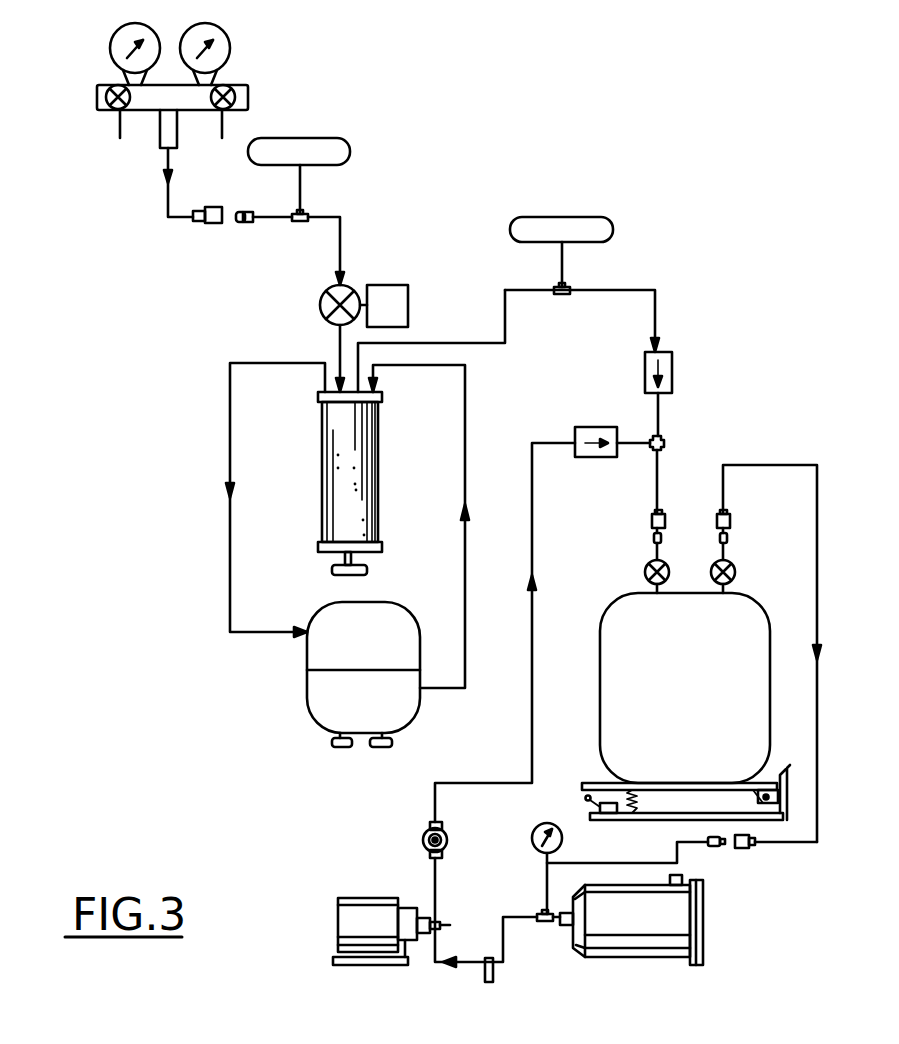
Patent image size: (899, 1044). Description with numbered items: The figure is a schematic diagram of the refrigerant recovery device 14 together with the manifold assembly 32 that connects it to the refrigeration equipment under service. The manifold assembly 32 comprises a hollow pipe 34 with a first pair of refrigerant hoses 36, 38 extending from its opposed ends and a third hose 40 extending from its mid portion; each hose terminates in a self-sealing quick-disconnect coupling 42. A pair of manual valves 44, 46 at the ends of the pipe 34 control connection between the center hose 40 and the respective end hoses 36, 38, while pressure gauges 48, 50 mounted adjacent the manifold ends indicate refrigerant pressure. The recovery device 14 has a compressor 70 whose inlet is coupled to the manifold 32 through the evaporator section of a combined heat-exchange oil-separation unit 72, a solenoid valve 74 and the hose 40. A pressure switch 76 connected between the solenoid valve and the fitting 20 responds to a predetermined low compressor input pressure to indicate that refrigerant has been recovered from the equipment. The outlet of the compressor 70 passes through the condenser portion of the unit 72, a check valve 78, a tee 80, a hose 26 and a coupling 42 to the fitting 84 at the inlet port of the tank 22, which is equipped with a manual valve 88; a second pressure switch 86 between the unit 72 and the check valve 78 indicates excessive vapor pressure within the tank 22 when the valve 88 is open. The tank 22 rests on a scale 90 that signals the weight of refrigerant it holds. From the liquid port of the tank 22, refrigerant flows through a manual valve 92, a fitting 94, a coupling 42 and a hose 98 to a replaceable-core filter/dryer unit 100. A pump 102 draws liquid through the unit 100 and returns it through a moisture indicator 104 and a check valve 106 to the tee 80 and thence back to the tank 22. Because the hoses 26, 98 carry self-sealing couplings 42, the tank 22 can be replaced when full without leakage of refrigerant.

The recovery device 14 is at (742, 176).
The fitting 20 is at (247, 222).
The tank 22 is at (600, 658).
The hose 26 is at (655, 487).
The manifold assembly 32 is at (318, 22).
The hollow pipe 34 is at (153, 108).
The refrigerant hose 36 is at (118, 115).
The refrigerant hose 38 is at (222, 125).
The third hose 40 is at (164, 186).
The self-sealing quick-disconnect coupling 42 is at (213, 224).
The manual valve 44 is at (97, 93).
The manual valve 46 is at (243, 87).
The pressure gauge 48 is at (148, 19).
The pressure gauge 50 is at (209, 29).
The compressor 70 is at (307, 697).
The combined heat-exchange oil-separation unit 72 is at (323, 457).
The solenoid valve 74 is at (320, 303).
The pressure switch 76 is at (328, 137).
The check valve 78 is at (673, 372).
The tee 80 is at (665, 436).
The fitting 84 is at (653, 540).
The pressure switch 86 is at (585, 217).
The manual valve 88 is at (645, 570).
The scale 90 is at (568, 796).
The manual valve 92 is at (736, 573).
The fitting 94 is at (729, 540).
The hose 98 is at (818, 789).
The replaceable-core filter/dryer unit 100 is at (650, 963).
The pump 102 is at (375, 886).
The moisture indicator 104 is at (425, 832).
The check valve 106 is at (598, 426).